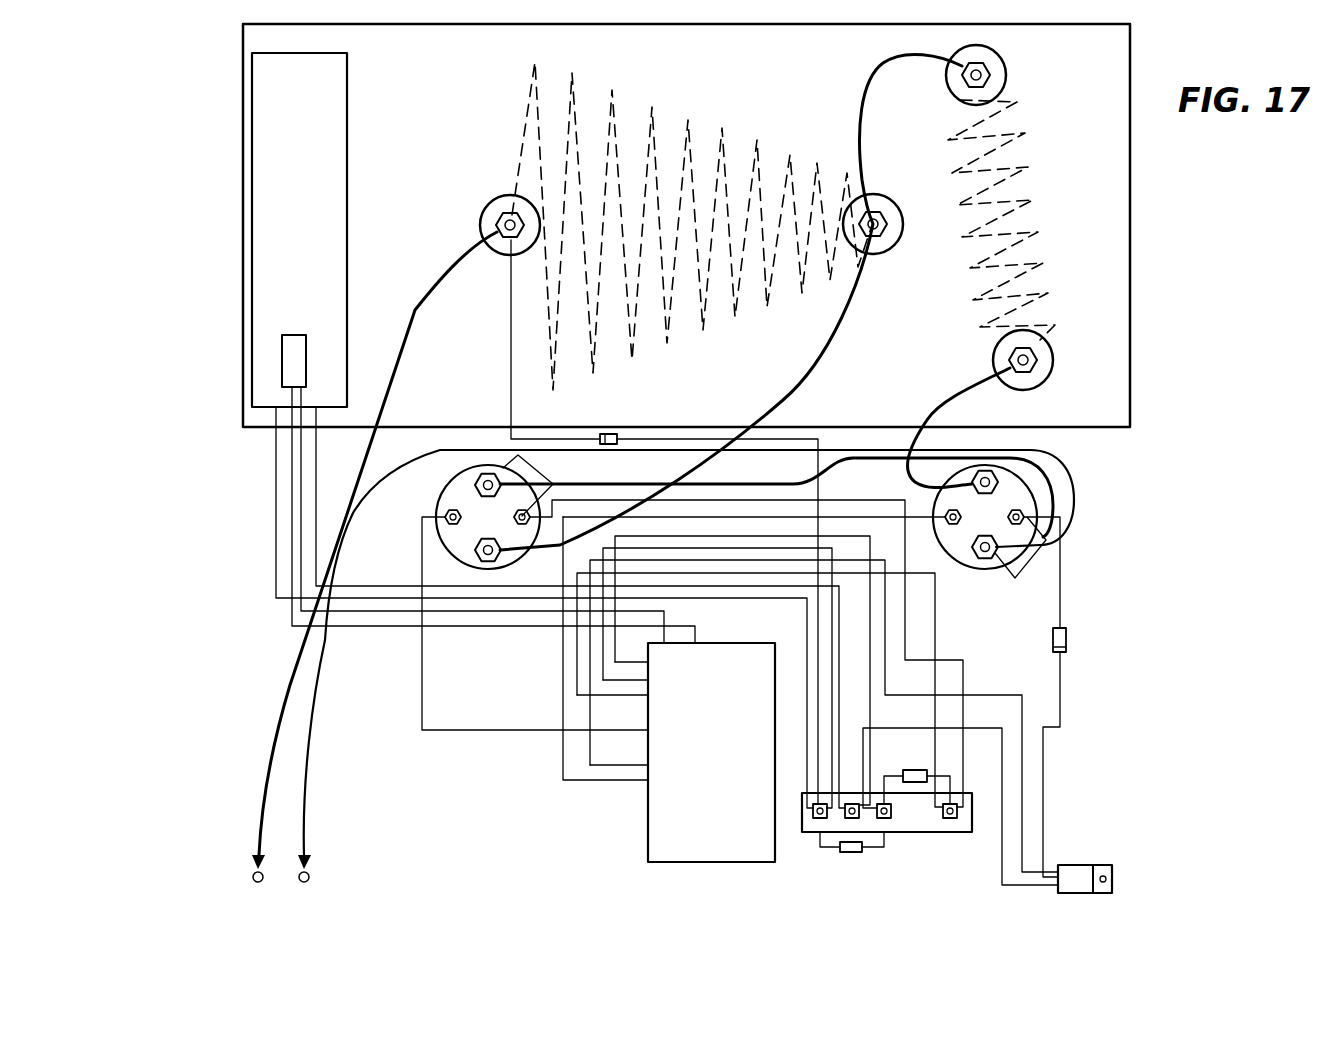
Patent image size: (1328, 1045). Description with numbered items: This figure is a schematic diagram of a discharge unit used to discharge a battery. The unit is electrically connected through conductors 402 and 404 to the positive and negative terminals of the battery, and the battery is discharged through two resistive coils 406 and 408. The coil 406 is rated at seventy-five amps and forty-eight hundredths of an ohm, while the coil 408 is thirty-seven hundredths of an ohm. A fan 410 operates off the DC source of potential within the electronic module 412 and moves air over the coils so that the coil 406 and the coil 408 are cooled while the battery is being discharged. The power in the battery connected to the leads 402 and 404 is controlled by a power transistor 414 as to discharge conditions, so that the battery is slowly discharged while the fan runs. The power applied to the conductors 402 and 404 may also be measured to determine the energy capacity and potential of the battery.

The conductor 402 is at (268, 783).
The conductor 404 is at (310, 783).
The resistive coil 406 is at (716, 118).
The resistive coil 408 is at (1068, 182).
The fan 410 is at (327, 138).
The electronic module 412 is at (672, 832).
The power transistor 414 is at (1074, 872).